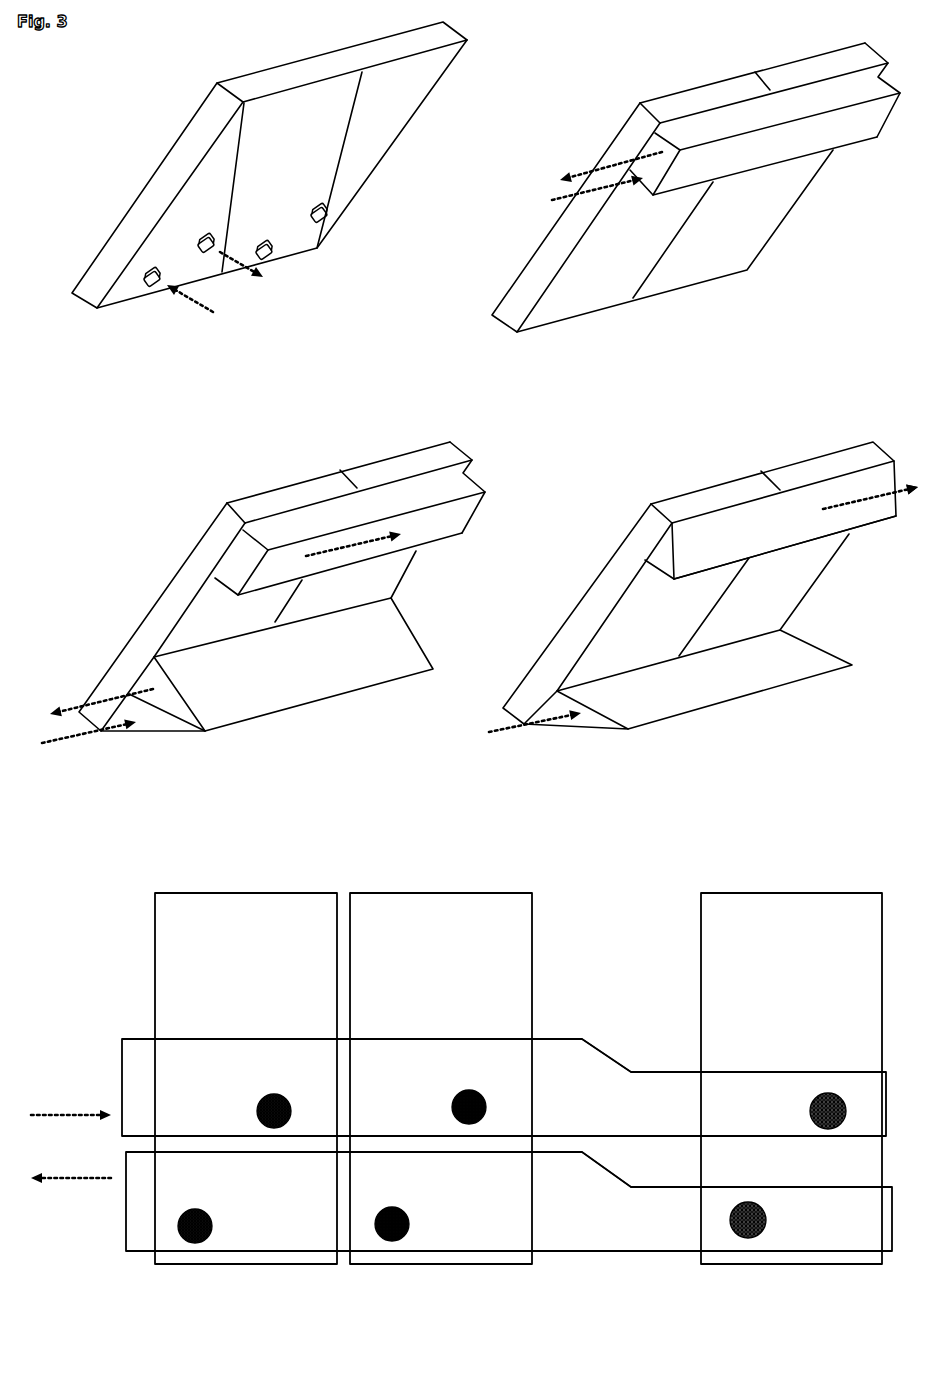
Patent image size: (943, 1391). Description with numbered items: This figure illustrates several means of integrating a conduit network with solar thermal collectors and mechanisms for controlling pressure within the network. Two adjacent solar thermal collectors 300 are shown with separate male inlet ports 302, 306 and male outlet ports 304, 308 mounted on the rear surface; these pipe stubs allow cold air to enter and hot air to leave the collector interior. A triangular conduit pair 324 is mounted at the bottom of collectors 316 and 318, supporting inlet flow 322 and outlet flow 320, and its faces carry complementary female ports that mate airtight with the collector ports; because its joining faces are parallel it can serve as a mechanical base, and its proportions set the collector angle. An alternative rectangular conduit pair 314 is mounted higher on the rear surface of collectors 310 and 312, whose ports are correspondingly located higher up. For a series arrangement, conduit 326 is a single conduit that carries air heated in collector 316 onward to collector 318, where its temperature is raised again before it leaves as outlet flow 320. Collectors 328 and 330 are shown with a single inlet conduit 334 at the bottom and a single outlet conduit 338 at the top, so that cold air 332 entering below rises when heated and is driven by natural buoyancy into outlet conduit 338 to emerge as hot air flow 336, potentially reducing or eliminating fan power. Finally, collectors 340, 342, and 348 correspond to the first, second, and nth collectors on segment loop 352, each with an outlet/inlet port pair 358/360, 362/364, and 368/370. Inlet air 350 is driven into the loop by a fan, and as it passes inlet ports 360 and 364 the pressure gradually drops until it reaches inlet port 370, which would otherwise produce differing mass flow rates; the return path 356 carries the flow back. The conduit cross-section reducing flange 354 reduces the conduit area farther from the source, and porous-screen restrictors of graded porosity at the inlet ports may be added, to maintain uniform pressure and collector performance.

The solar thermal collectors 300 is at (177, 125).
The male inlet port 302 is at (143, 292).
The male outlet port 304 is at (190, 242).
The male inlet port 306 is at (298, 252).
The male outlet port 308 is at (335, 215).
The collector 310 is at (655, 90).
The collector 312 is at (762, 62).
The rectangular conduit pair 314 is at (893, 80).
The collector 316 is at (242, 491).
The collector 318 is at (423, 444).
The outlet flow 320 is at (69, 697).
The inlet flow 322 is at (65, 748).
The triangular conduit pair 324 is at (185, 739).
The conduit 326 is at (477, 475).
The collector 328 is at (662, 490).
The collector 330 is at (842, 445).
The cold air 332 is at (491, 738).
The inlet conduit 334 is at (608, 734).
The hot air flow 336 is at (899, 473).
The outlet conduit 338 is at (868, 532).
The collector 340 is at (219, 885).
The collector 342 is at (425, 885).
The collector 348 is at (773, 885).
The inlet air 350 is at (53, 1104).
The segment loop 352 is at (139, 1036).
The conduit cross-section reducing flange 354 is at (611, 1051).
The return path 356 is at (72, 1182).
The outlet port 358 is at (192, 1249).
The inlet port 360 is at (270, 1135).
The outlet port 362 is at (390, 1247).
The inlet port 364 is at (472, 1135).
The outlet port 368 is at (745, 1240).
The inlet port 370 is at (827, 1135).